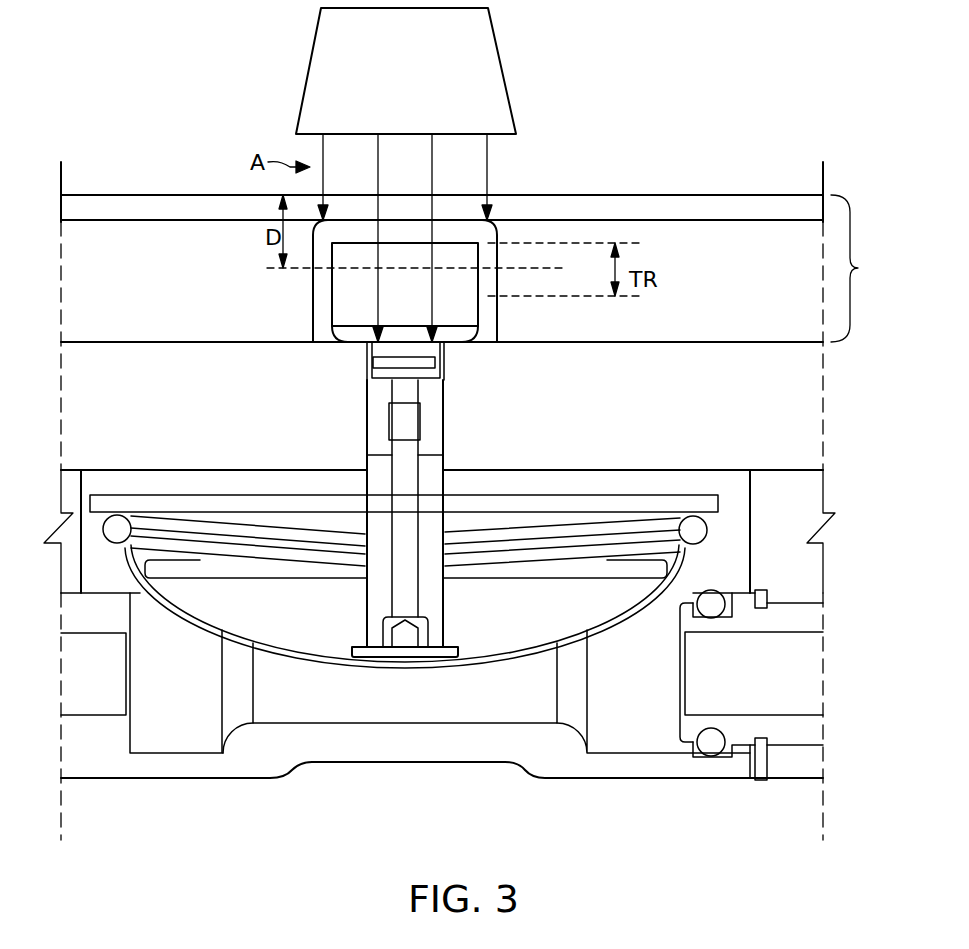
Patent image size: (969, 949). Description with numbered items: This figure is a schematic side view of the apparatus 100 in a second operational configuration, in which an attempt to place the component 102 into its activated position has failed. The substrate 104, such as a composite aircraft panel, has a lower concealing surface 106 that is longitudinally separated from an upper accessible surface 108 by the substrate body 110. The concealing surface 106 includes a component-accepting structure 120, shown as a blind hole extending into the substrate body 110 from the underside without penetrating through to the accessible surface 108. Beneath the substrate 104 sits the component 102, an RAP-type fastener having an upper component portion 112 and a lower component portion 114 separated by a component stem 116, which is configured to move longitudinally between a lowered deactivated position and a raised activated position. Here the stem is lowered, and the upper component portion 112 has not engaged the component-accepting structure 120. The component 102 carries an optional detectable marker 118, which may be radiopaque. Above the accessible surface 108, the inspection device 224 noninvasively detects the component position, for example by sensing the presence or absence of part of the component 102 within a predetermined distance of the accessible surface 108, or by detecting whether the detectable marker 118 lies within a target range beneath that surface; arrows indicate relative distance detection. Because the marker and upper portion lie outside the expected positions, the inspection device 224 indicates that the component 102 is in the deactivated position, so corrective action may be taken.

The apparatus 100 is at (822, 135).
The component 102 is at (292, 442).
The substrate 104 is at (858, 268).
The concealing surface 106 is at (776, 345).
The accessible surface 108 is at (728, 195).
The substrate body 110 is at (738, 313).
The upper component portion 112 is at (455, 388).
The lower component portion 114 is at (468, 640).
The component stem 116 is at (427, 503).
The detectable marker 118 is at (435, 362).
The component-accepting structure 120 is at (464, 310).
The inspection device 224 is at (481, 70).